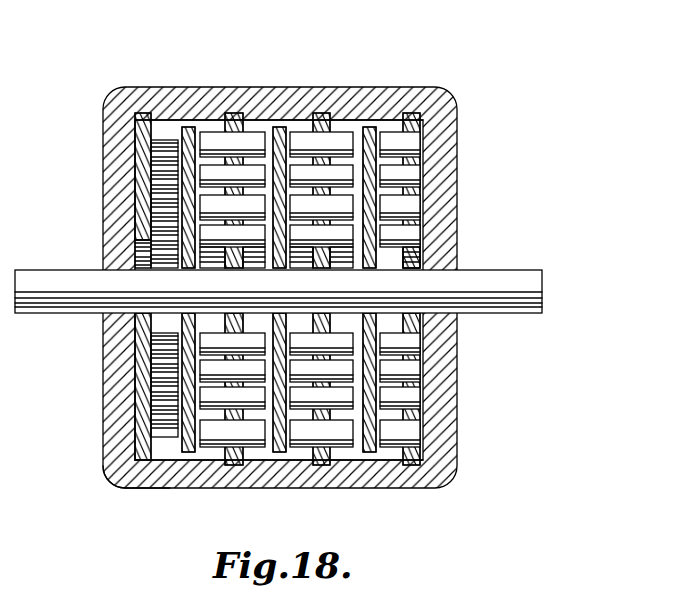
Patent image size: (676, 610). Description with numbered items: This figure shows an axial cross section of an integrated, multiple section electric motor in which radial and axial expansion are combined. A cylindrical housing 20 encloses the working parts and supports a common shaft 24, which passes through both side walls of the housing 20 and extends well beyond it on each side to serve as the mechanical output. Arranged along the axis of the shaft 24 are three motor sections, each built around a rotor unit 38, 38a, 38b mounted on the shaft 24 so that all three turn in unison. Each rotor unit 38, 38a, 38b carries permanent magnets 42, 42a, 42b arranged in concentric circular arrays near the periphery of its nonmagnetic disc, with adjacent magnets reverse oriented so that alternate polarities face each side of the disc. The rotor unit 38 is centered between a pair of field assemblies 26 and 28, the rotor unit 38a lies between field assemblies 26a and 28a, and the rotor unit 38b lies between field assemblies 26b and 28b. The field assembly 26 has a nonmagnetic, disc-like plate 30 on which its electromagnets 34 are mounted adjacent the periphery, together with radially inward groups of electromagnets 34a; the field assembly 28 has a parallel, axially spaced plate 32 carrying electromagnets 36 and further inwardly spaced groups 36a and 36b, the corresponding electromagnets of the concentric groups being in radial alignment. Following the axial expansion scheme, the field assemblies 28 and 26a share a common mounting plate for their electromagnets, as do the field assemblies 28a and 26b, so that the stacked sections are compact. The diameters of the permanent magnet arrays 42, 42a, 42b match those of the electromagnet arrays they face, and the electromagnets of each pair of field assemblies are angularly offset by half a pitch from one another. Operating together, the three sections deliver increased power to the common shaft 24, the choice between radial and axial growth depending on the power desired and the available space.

The cylindrical housing 20 is at (447, 400).
The shaft 24 is at (508, 278).
The field assembly 26 is at (157, 126).
The field assembly 26a is at (254, 122).
The field assembly 26b is at (340, 126).
The field assembly 28 is at (219, 121).
The field assembly 28a is at (310, 126).
The field assembly 28b is at (400, 125).
The plate 30 is at (152, 462).
The plate 32 is at (415, 347).
The electromagnets 34 is at (147, 452).
The electromagnets 34a is at (187, 408).
The electromagnets 36 is at (207, 140).
The electromagnets 36a is at (208, 171).
The electromagnets 36b is at (208, 204).
The rotor unit 38 is at (188, 114).
The rotor unit 38a is at (295, 128).
The rotor unit 38b is at (379, 116).
The permanent magnet components 42 is at (176, 446).
The permanent magnets 42a is at (157, 427).
The permanent magnets 42b is at (187, 365).